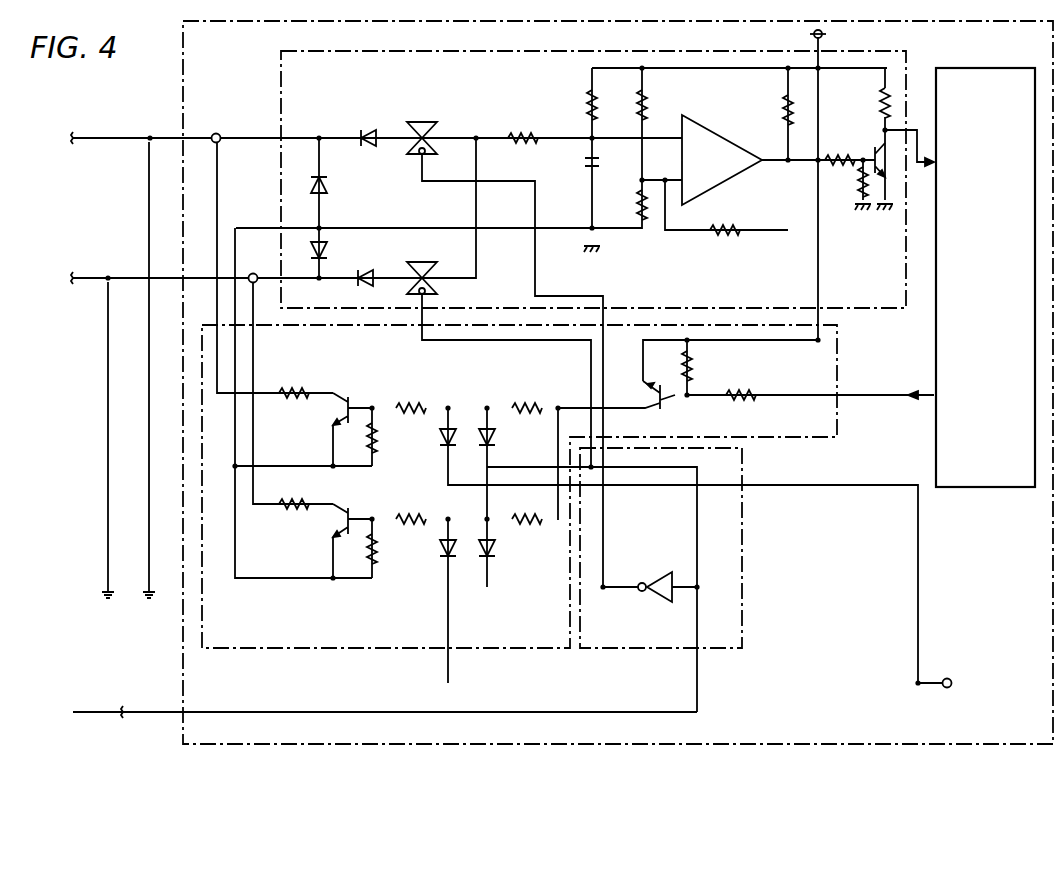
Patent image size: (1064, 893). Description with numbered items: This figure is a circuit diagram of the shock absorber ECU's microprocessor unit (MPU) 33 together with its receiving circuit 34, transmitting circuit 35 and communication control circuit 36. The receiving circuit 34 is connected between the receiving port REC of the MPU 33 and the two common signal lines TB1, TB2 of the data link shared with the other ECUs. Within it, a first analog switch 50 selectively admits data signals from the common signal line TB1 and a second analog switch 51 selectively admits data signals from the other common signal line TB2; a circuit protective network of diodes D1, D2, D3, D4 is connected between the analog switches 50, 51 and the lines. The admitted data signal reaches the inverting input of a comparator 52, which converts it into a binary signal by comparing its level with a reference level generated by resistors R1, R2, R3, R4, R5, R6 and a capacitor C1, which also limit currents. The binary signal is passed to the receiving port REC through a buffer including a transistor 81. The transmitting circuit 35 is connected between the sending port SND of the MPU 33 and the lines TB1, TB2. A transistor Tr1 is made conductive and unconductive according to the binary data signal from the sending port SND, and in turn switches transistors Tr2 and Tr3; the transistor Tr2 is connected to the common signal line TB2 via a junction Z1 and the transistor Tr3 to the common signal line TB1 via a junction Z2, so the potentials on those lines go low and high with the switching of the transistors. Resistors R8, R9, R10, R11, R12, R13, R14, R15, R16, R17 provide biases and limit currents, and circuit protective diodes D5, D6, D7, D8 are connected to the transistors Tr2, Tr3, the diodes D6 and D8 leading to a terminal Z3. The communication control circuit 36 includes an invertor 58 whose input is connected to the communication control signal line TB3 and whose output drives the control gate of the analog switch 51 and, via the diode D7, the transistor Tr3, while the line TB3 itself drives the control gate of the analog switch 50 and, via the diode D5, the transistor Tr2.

The microprocessor unit (MPU) 33 is at (985, 488).
The receiving circuit 34 is at (858, 54).
The transmitting circuit 35 is at (837, 352).
The communication control circuit 36 is at (742, 452).
The first analog switch 50 is at (422, 265).
The second analog switch 51 is at (422, 123).
The comparator 52 is at (714, 128).
The invertor 58 is at (656, 600).
The transistor 81 is at (870, 148).
The junction Z1 is at (216, 133).
The junction Z2 is at (254, 273).
The terminal Z3 is at (948, 678).
The common signal line TB1 is at (106, 501).
The common signal line TB2 is at (147, 523).
The communication control signal line TB3 is at (154, 711).
The diode D1 is at (368, 130).
The diode D2 is at (335, 183).
The diode D3 is at (312, 252).
The diode D4 is at (364, 270).
The circuit protective diode D5 is at (497, 438).
The circuit protective diode D6 is at (439, 441).
The circuit protective diode D7 is at (497, 549).
The circuit protective diode D8 is at (442, 550).
The resistor R1 is at (523, 126).
The resistor R2 is at (579, 105).
The resistor R3 is at (656, 105).
The resistor R4 is at (626, 205).
The resistor R5 is at (725, 241).
The resistor R6 is at (776, 110).
The resistor R8 is at (700, 366).
The resistor R9 is at (810, 384).
The resistor R10 is at (528, 397).
The resistor R11 is at (412, 397).
The resistor R12 is at (391, 438).
The resistor R13 is at (294, 382).
The resistor R14 is at (528, 508).
The resistor R15 is at (412, 508).
The resistor R16 is at (391, 549).
The resistor R17 is at (294, 493).
The capacitor C1 is at (607, 162).
The transistor Tr1 is at (666, 404).
The transistor Tr2 is at (340, 408).
The transistor Tr3 is at (340, 520).